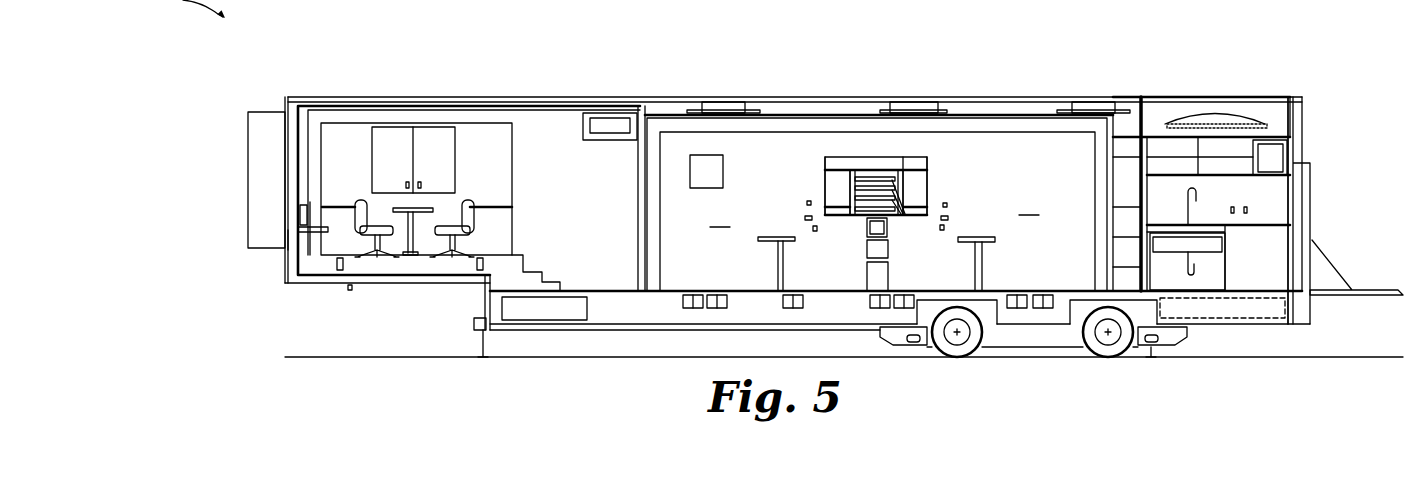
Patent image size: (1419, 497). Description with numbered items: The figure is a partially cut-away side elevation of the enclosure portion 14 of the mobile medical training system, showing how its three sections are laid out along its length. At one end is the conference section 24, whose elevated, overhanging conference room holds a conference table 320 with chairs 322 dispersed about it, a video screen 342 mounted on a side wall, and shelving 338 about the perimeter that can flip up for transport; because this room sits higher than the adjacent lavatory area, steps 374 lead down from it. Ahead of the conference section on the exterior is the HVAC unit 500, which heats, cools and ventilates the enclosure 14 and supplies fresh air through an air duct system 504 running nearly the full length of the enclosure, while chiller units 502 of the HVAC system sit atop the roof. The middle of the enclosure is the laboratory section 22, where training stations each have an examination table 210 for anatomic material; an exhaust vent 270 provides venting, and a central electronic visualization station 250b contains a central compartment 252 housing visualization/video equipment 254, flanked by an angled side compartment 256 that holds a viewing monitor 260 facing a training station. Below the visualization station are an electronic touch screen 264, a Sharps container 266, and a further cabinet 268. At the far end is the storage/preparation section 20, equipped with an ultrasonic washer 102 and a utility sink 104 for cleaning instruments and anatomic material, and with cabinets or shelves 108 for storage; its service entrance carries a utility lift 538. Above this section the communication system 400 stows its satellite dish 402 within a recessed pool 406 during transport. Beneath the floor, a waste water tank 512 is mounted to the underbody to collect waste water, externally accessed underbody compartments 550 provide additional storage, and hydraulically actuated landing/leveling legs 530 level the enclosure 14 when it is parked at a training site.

The enclosure portion 14 is at (231, 83).
The storage/preparation section 20 is at (1200, 82).
The laboratory section 22 is at (864, 85).
The conference section 24 is at (358, 76).
The ultrasonic cleaner or washer 102 is at (1273, 267).
The utility sink 104 is at (1202, 249).
The cabinets or shelves 108 is at (1135, 195).
The examination table 210 is at (763, 254).
The central electronic visualization station 250b is at (819, 166).
The central compartment 252 is at (883, 155).
The visualization/video equipment 254 is at (833, 155).
The side compartment 256 is at (918, 162).
The viewing monitor 260 is at (829, 192).
The electronic touch screen 264 is at (870, 222).
The Sharps container 266 is at (870, 253).
The lower cabinet 268 is at (867, 286).
The exhaust vent 270 is at (698, 160).
The conference table 320 is at (403, 235).
The chairs 322 is at (357, 201).
The shelving 338 is at (497, 201).
The video screen 342 is at (428, 133).
The steps 374 is at (542, 268).
The communication system 400 is at (1273, 100).
The satellite dish 402 is at (1232, 118).
The recessed area or pool 406 is at (1280, 111).
The HVAC unit 500 is at (265, 108).
The chiller units 502 is at (720, 102).
The air duct system 504 is at (290, 245).
The waste water tank 512 is at (1252, 320).
The landing/leveling legs 530 is at (482, 343).
The utility lift 538 is at (1361, 287).
The underbody compartments 550 is at (533, 318).